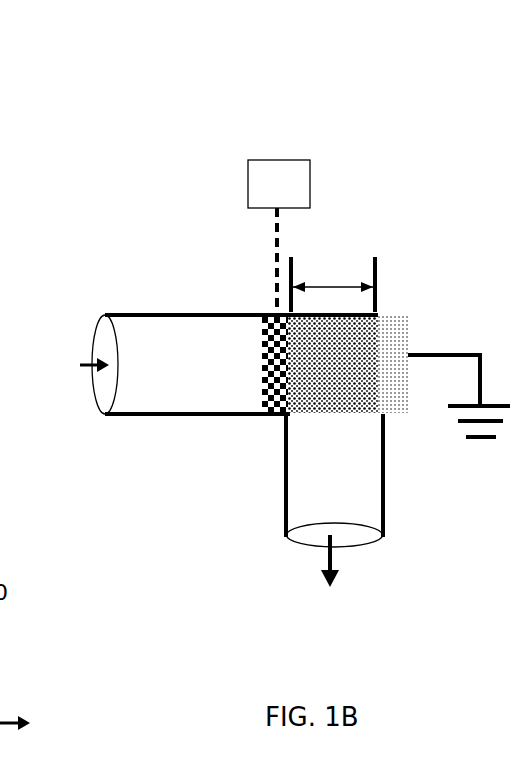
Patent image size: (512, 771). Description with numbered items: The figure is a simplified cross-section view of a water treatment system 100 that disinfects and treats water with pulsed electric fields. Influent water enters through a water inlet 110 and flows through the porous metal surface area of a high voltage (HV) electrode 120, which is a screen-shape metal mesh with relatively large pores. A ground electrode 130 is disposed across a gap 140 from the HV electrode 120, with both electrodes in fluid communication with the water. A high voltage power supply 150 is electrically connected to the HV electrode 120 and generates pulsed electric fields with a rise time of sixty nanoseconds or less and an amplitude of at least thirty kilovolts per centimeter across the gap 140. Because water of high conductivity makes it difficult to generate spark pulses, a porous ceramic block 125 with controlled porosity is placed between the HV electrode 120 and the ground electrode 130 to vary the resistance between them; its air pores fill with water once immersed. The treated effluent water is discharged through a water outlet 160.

The water treatment system 100 is at (142, 109).
The water inlet 110 is at (185, 315).
The high voltage (HV) electrode 120 is at (265, 365).
The porous ceramic block 125 is at (335, 415).
The ground electrode 130 is at (393, 316).
The gap 140 is at (331, 285).
The high voltage power supply 150 is at (310, 187).
The water outlet 160 is at (285, 470).